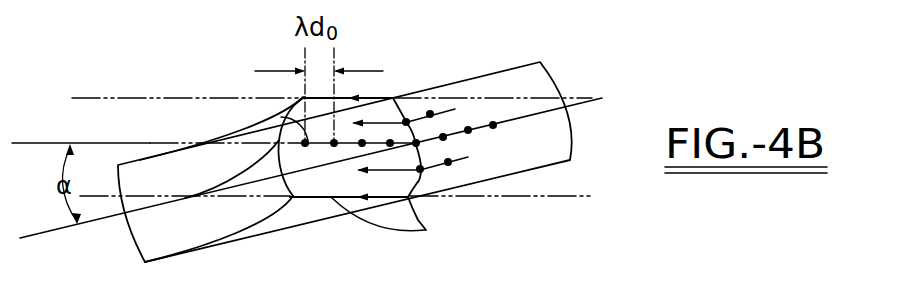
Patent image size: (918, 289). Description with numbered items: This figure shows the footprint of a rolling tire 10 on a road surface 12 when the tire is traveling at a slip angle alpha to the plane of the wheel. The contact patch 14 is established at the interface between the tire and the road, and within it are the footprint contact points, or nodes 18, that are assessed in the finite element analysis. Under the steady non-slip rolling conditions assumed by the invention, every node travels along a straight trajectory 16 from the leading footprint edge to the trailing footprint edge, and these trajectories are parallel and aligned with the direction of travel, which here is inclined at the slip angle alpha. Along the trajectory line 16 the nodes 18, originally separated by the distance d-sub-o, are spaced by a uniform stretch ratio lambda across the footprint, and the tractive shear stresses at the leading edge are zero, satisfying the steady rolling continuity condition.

The rolling tire 10 is at (527, 62).
The road surface 12 is at (145, 97).
The contact patch 14 is at (392, 98).
The trajectory 16 is at (281, 117).
The nodes 18 is at (468, 157).